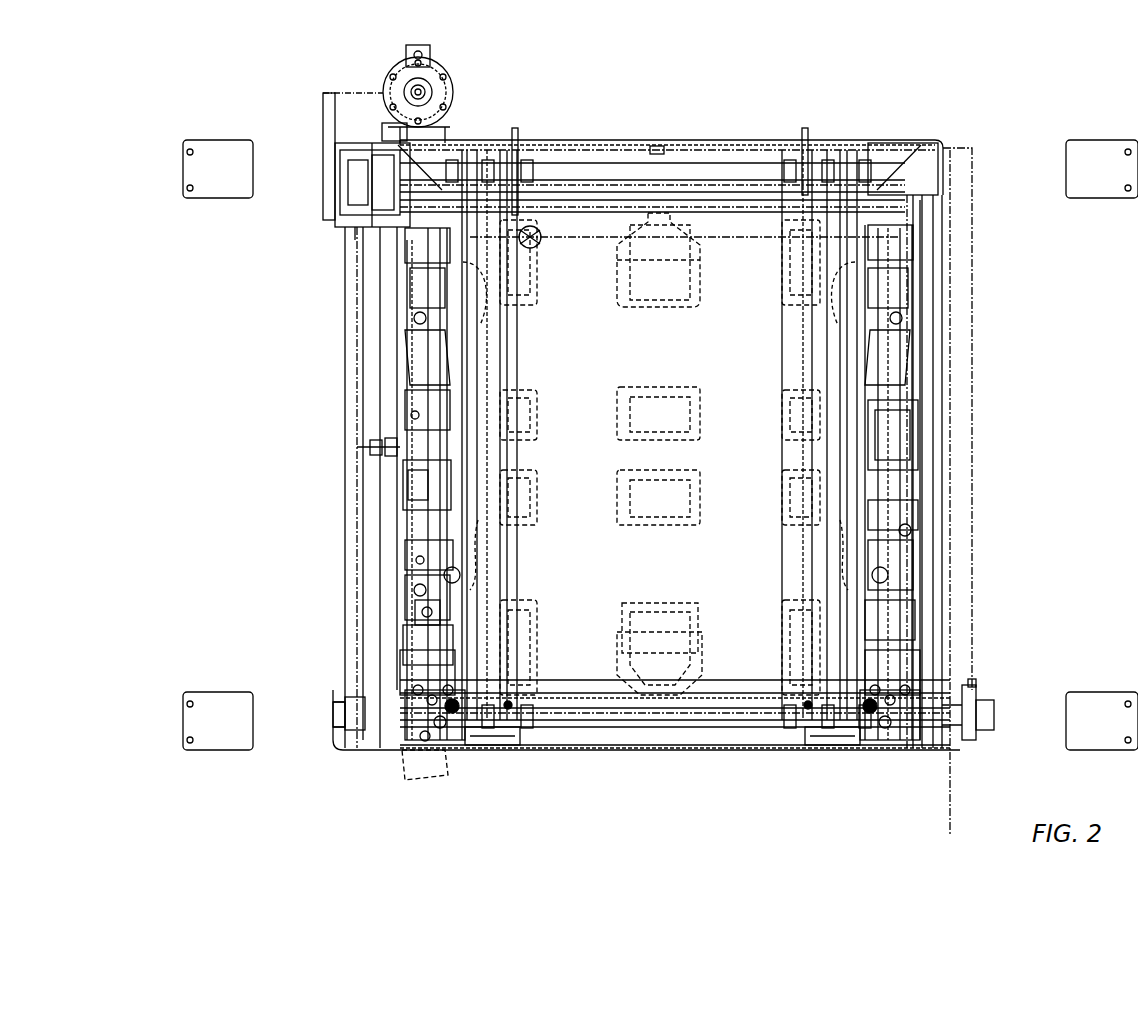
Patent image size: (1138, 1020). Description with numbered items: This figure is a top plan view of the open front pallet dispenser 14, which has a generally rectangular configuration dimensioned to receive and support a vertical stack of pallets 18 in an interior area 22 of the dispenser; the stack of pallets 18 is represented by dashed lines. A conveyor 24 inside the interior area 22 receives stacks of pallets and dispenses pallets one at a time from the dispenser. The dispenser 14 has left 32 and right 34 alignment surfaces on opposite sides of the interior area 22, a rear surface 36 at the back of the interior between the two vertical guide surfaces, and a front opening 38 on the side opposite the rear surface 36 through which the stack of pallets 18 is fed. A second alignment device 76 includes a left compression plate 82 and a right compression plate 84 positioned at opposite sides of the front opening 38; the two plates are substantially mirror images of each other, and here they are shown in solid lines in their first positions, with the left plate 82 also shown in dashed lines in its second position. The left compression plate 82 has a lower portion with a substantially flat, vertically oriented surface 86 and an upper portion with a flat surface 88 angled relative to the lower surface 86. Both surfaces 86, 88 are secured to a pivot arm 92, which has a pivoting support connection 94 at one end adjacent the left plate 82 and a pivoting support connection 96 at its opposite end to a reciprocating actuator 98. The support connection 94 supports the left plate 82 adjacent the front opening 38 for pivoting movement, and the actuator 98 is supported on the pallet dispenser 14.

The open front pallet dispenser 14 is at (315, 463).
The stack of pallets 18 is at (725, 270).
The interior area 22 is at (748, 348).
The conveyor 24 is at (508, 707).
The left alignment surface 32 is at (465, 430).
The right alignment surface 34 is at (855, 417).
The rear surface 36 is at (582, 160).
The front opening 38 is at (650, 760).
The second alignment device 76 is at (990, 676).
The left compression plate 82 is at (427, 772).
The right compression plate 84 is at (837, 737).
The lower portion surface 86 is at (470, 700).
The upper portion surface 88 is at (495, 727).
The pivot arm 92 is at (428, 740).
The pivoting support connection 94 is at (440, 700).
The pivoting support connection 96 is at (435, 722).
The reciprocating actuator 98 is at (410, 618).